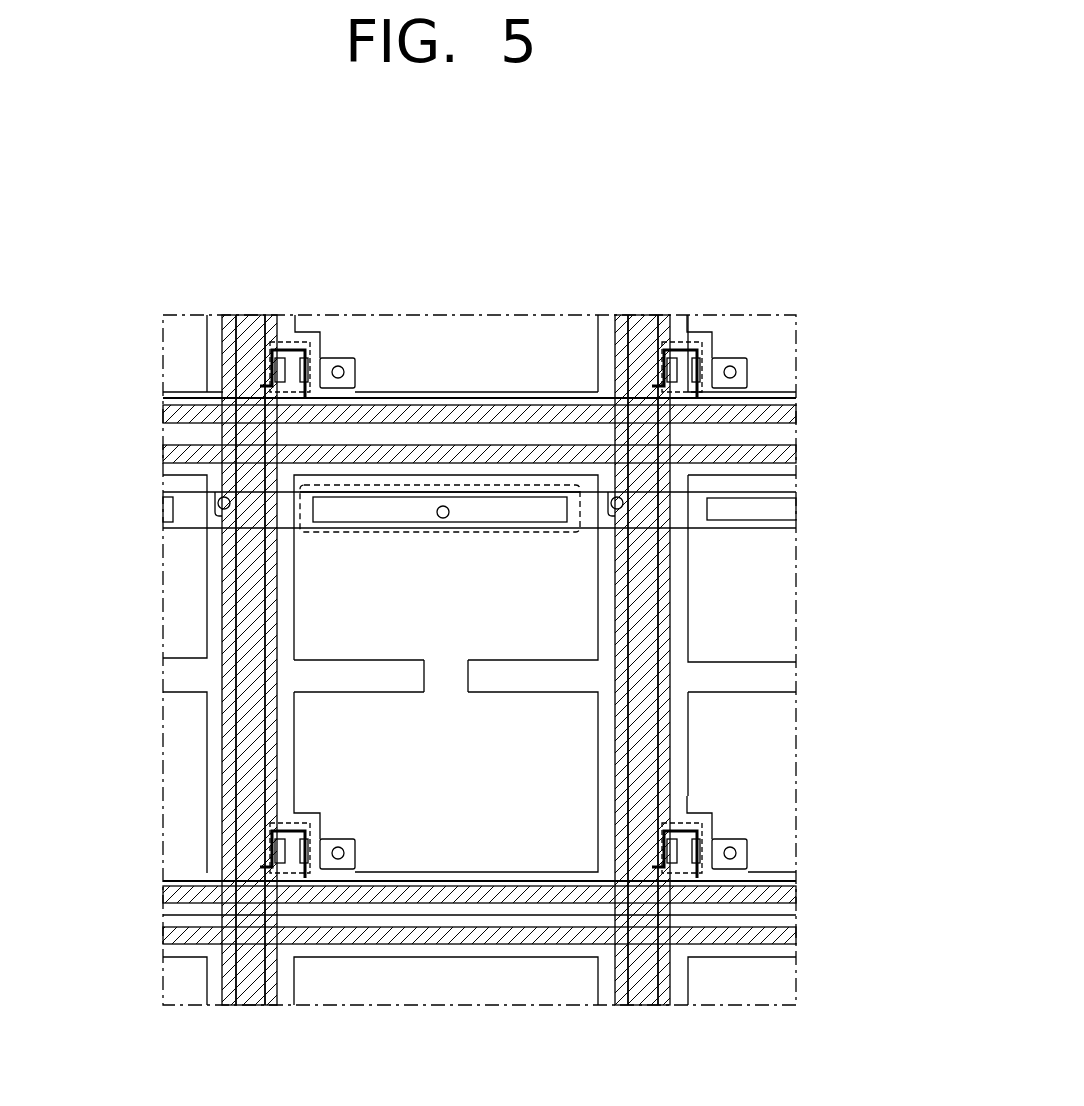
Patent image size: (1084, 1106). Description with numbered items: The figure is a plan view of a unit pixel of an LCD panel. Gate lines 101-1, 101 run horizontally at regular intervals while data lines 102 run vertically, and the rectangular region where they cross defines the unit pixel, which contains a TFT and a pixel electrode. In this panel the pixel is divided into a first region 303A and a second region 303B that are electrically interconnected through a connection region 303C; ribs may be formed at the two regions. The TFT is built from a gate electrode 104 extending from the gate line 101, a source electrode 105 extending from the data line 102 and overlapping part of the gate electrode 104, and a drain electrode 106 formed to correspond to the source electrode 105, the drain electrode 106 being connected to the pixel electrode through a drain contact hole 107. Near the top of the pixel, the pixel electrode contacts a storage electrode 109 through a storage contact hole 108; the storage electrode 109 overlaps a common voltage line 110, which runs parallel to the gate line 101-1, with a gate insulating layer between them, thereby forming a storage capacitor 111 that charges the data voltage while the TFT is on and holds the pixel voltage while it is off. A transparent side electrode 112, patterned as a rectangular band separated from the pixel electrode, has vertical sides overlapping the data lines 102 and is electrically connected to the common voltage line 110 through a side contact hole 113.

The gate line 101 is at (780, 880).
The gate line 101-1 is at (797, 392).
The data line 102 is at (248, 315).
The gate electrode 104 is at (268, 855).
The source electrode 105 is at (268, 847).
The drain electrode 106 is at (291, 880).
The drain contact hole 107 is at (338, 862).
The storage contact hole 108 is at (444, 506).
The storage electrode 109 is at (367, 497).
The common voltage line 110 is at (398, 477).
The storage capacitor 111 is at (505, 480).
The side electrode 112 is at (225, 548).
The side contact hole 113 is at (622, 504).
The first region 303A is at (313, 582).
The second region 303B is at (313, 733).
The connection region 303C is at (443, 658).
The thin film transistor TFT is at (220, 923).